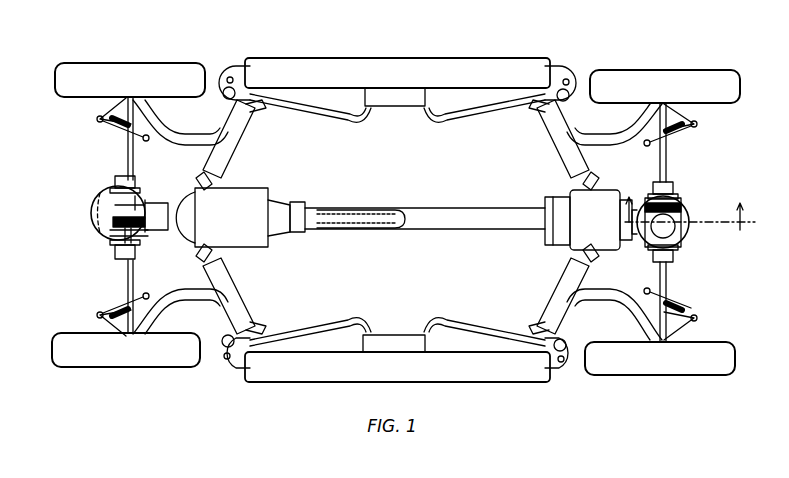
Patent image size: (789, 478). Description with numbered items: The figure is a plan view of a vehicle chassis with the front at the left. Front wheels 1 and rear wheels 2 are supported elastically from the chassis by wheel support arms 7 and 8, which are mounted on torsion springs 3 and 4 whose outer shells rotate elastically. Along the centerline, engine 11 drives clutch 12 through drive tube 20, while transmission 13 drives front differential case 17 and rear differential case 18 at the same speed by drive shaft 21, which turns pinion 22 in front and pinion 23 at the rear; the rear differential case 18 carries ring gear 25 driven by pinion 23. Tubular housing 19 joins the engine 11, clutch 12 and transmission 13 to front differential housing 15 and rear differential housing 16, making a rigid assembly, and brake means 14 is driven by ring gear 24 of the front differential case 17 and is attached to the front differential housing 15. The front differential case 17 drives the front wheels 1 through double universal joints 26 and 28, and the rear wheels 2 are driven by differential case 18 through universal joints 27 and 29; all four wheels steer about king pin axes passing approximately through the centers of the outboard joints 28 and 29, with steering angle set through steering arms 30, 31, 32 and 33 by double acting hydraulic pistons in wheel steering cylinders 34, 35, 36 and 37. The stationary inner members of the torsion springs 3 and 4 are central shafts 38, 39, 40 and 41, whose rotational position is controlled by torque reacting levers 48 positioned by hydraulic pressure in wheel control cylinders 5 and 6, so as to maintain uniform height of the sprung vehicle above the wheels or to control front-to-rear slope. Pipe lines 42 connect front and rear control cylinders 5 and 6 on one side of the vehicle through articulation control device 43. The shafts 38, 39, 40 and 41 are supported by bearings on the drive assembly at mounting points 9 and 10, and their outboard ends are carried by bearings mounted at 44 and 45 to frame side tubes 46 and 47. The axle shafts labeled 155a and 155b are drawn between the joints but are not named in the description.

The front wheel 1 is at (80, 70).
The rear wheel 2 is at (715, 78).
The torsion spring 3 is at (252, 130).
The torsion spring 4 is at (556, 138).
The wheel control cylinder 5 is at (226, 72).
The wheel control cylinder 6 is at (570, 78).
The wheel support arm 7 is at (174, 136).
The wheel support arm 8 is at (632, 140).
The mounting point 9 is at (202, 181).
The mounting point 10 is at (596, 184).
The engine 11 is at (258, 240).
The clutch 12 is at (554, 240).
The transmission 13 is at (582, 212).
The brake means 14 is at (92, 206).
The differential housing 15 is at (140, 232).
The differential housing 16 is at (687, 220).
The differential case 17 is at (125, 210).
The differential case 18 is at (678, 231).
The tubular housing 19 is at (428, 220).
The drive tube 20 is at (392, 213).
The drive shaft 21 is at (366, 219).
The pinion 22 is at (142, 210).
The pinion 23 is at (624, 242).
The ring gear 24 is at (112, 224).
The ring gear 25 is at (680, 206).
The universal joint 26 is at (136, 180).
The universal joint 27 is at (672, 188).
The universal joint 28 is at (147, 107).
The universal joint 29 is at (648, 107).
The steering arm 30 is at (96, 318).
The steering arm 31 is at (96, 114).
The steering arm 32 is at (697, 322).
The steering arm 33 is at (698, 118).
The wheel steering cylinder 34 is at (110, 306).
The wheel steering cylinder 35 is at (110, 128).
The wheel steering cylinder 36 is at (690, 305).
The wheel steering cylinder 37 is at (690, 132).
The central shaft 38 is at (214, 254).
The central shaft 39 is at (215, 183).
The central shaft 40 is at (578, 260).
The central shaft 41 is at (578, 183).
The pipe line 42 is at (345, 116).
The articulation control device 43 is at (406, 102).
The bearing mounting 44 is at (255, 62).
The bearing mounting 45 is at (538, 70).
The frame side tube 46 is at (455, 375).
The frame side tube 47 is at (350, 66).
The torque reacting lever 48 is at (262, 108).
The front lower axle shaft 155a is at (126, 284).
The front upper axle shaft 155b is at (126, 146).